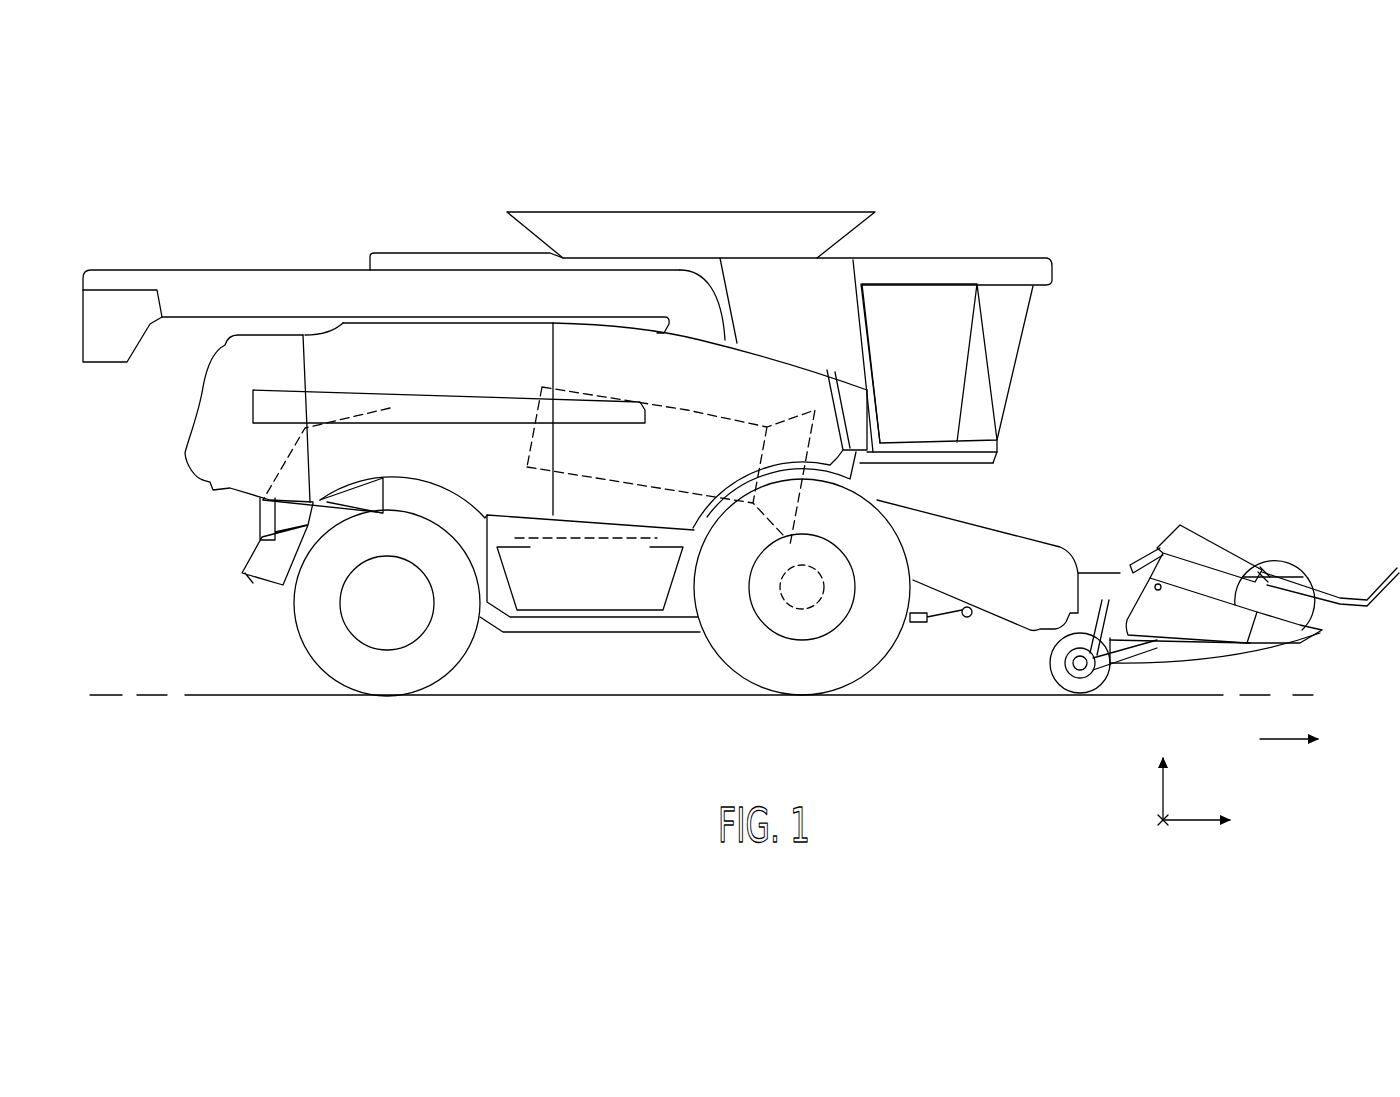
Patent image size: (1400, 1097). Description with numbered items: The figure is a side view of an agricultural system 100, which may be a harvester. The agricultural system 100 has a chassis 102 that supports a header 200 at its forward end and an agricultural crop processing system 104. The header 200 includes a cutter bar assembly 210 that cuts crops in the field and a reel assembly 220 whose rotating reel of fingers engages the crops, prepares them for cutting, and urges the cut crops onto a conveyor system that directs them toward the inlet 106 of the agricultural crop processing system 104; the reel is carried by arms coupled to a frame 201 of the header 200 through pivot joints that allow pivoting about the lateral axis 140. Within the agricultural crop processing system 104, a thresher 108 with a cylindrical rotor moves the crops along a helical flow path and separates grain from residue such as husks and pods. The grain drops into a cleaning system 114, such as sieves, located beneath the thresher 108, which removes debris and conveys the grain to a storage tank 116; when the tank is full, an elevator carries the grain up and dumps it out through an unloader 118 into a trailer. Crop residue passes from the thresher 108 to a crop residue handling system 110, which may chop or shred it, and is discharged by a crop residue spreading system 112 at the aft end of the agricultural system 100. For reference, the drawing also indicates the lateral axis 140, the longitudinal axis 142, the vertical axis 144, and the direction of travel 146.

The agricultural system 100 is at (1055, 169).
The chassis 102 is at (530, 639).
The agricultural crop processing system 104 is at (673, 386).
The inlet 106 is at (885, 494).
The thresher 108 is at (688, 408).
The crop residue handling system 110 is at (353, 379).
The crop residue spreading system 112 is at (246, 552).
The cleaning system 114 is at (559, 547).
The storage tank 116 is at (617, 614).
The unloader 118 is at (218, 264).
The lateral axis 140 is at (1158, 820).
The longitudinal axis 142 is at (1190, 822).
The vertical axis 144 is at (1162, 790).
The direction of travel 146 is at (1283, 738).
The header 200 is at (1191, 495).
The frame 201 is at (1112, 580).
The cutter bar assembly 210 is at (1311, 650).
The reel assembly 220 is at (1289, 563).